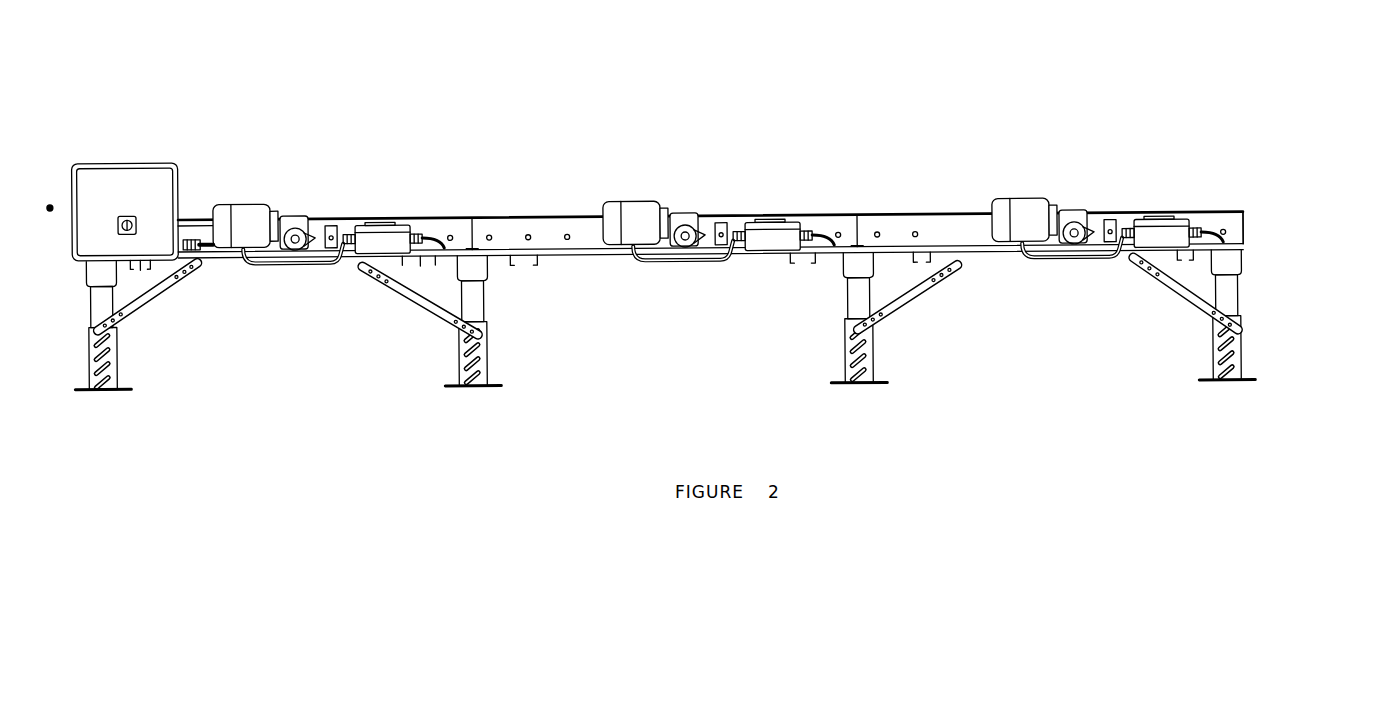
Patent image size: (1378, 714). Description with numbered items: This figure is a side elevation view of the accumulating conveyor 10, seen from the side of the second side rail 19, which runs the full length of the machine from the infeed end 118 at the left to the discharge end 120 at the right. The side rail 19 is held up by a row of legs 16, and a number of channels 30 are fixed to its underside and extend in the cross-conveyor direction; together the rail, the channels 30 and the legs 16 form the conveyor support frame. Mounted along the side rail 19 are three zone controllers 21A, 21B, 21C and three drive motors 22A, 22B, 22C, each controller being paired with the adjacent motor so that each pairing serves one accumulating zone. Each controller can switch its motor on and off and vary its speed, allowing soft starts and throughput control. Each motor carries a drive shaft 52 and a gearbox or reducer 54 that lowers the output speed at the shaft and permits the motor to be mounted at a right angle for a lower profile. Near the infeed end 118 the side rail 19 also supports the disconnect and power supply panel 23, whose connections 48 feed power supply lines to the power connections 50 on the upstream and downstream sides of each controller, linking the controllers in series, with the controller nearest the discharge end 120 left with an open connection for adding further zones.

The accumulating conveyor 10 is at (644, 101).
The legs 16 is at (113, 370).
The second side rail 19 is at (507, 228).
The zone controller 21A is at (378, 234).
The zone controller 21B is at (777, 237).
The zone controller 21C is at (1170, 228).
The drive motor 22A is at (245, 213).
The drive motor 22B is at (628, 211).
The drive motor 22C is at (1025, 209).
The disconnect and power supply panel 23 is at (105, 173).
The channels 30 is at (532, 263).
The connections 48 is at (180, 217).
The power connections 50 is at (334, 247).
The drive shaft 52 is at (335, 263).
The gearbox or reducer 54 is at (295, 255).
The infeed end 118 is at (35, 193).
The discharge end 120 is at (1272, 269).